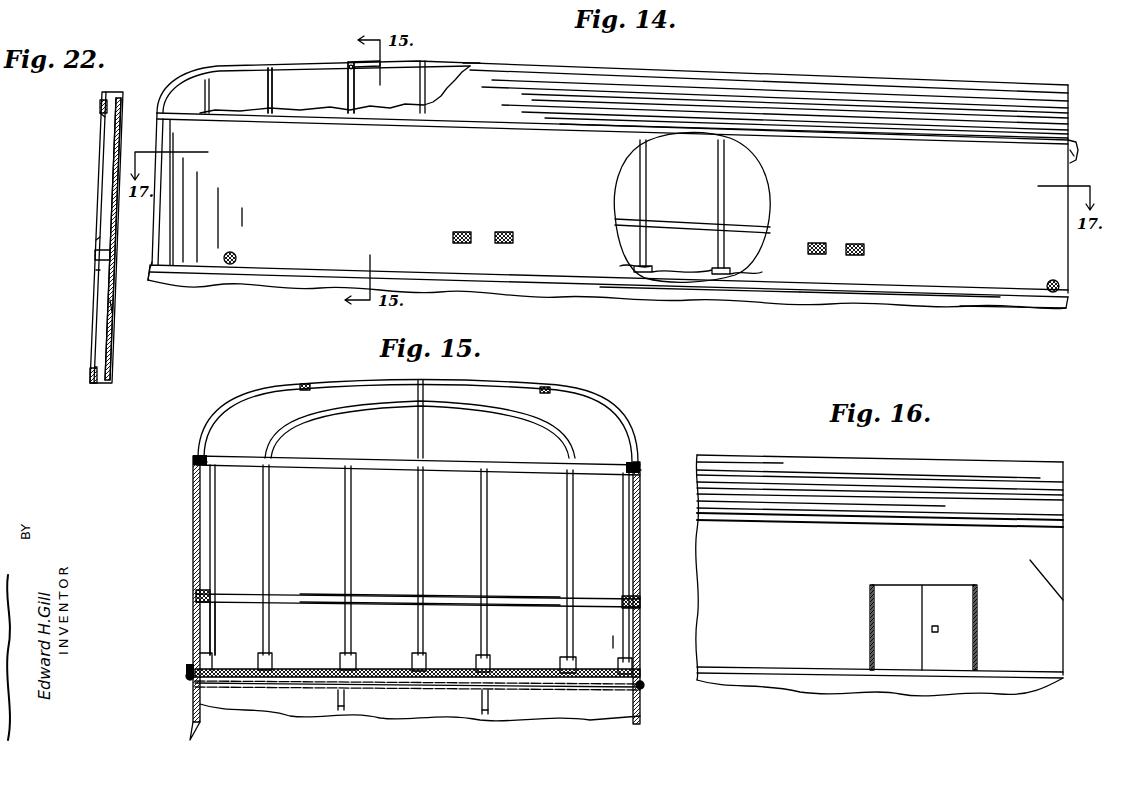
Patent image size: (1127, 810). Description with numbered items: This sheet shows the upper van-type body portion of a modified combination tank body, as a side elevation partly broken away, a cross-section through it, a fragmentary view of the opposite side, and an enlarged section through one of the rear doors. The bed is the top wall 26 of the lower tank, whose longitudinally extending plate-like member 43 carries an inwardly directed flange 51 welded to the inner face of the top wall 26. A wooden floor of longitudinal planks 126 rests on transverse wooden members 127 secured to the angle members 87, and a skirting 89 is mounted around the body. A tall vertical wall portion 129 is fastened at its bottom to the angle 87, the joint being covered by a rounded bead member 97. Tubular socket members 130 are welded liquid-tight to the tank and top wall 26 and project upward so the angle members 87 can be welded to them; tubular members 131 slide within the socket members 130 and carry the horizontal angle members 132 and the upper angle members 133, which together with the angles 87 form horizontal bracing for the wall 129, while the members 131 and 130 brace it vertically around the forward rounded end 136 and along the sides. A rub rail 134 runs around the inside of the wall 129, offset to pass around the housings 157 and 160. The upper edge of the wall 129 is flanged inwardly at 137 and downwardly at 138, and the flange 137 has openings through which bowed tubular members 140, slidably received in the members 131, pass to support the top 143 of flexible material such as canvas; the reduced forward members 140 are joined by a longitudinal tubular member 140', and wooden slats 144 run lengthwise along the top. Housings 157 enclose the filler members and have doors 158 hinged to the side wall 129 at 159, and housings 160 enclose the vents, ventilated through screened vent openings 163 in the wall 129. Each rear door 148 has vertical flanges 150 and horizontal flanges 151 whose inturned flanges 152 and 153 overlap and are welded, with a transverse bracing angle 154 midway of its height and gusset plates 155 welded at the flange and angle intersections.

In FIG. 15, the top wall 26 is at (543, 688).
In FIG. 15, the longitudinally extending plate-like member 43 is at (338, 698).
In FIG. 15, the inwardly directed flange 51 is at (344, 705).
In FIG. 15, the angle member 87 is at (188, 667).
In FIG. 14, the skirting 89 is at (1013, 300).
In FIG. 15, the skirting 89 is at (190, 702).
In FIG. 16, the skirting 89 is at (999, 680).
In FIG. 14, the rounded bead member 97 is at (797, 290).
In FIG. 15, the rounded bead member 97 is at (186, 675).
In FIG. 15, the plank 126 is at (290, 670).
In FIG. 15, the transversely extending wooden member 127 is at (302, 675).
In FIG. 14, the vertical wall portion 129 is at (900, 278).
In FIG. 15, the vertical wall portion 129 is at (195, 528).
In FIG. 16, the vertical wall portion 129 is at (1063, 626).
In FIG. 14, the tubular socket member 130 is at (648, 270).
In FIG. 15, the tubular socket member 130 is at (210, 657).
In FIG. 14, the tubular member 131 is at (686, 183).
In FIG. 15, the tubular member 131 is at (205, 517).
In FIG. 14, the horizontal angle member 132 is at (733, 224).
In FIG. 15, the horizontal angle member 132 is at (196, 592).
In FIG. 15, the angle member 133 is at (196, 464).
In FIG. 15, the rub rail 134 is at (441, 595).
In FIG. 14, the forward rounded end 136 is at (150, 266).
In FIG. 15, the inward flange 137 is at (198, 456).
In FIG. 15, the downward flange 138 is at (218, 457).
In FIG. 14, the tubular member 140 is at (315, 82).
In FIG. 15, the tubular member 140 is at (418, 421).
In FIG. 14, the longitudinally extending member 140' is at (303, 74).
In FIG. 15, the longitudinally extending member 140' is at (459, 410).
In FIG. 14, the top 143 is at (656, 100).
In FIG. 16, the top 143 is at (900, 500).
In FIG. 14, the wooden slat 144 is at (463, 64).
In FIG. 15, the wooden slat 144 is at (305, 384).
In FIG. 22, the door 148 is at (114, 307).
In FIG. 22, the flange 150 is at (116, 128).
In FIG. 22, the flange 151 is at (117, 92).
In FIG. 22, the inturned flange 152 is at (100, 103).
In FIG. 22, the inturned flange 153 is at (96, 330).
In FIG. 22, the bracing angle 154 is at (102, 252).
In FIG. 22, the gusset plate 155 is at (104, 117).
In FIG. 15, the housing 157 is at (613, 640).
In FIG. 16, the door 158 is at (884, 590).
In FIG. 16, the hinge 159 is at (872, 622).
In FIG. 15, the housing 160 is at (216, 620).
In FIG. 14, the screened vent opening 163 is at (503, 232).